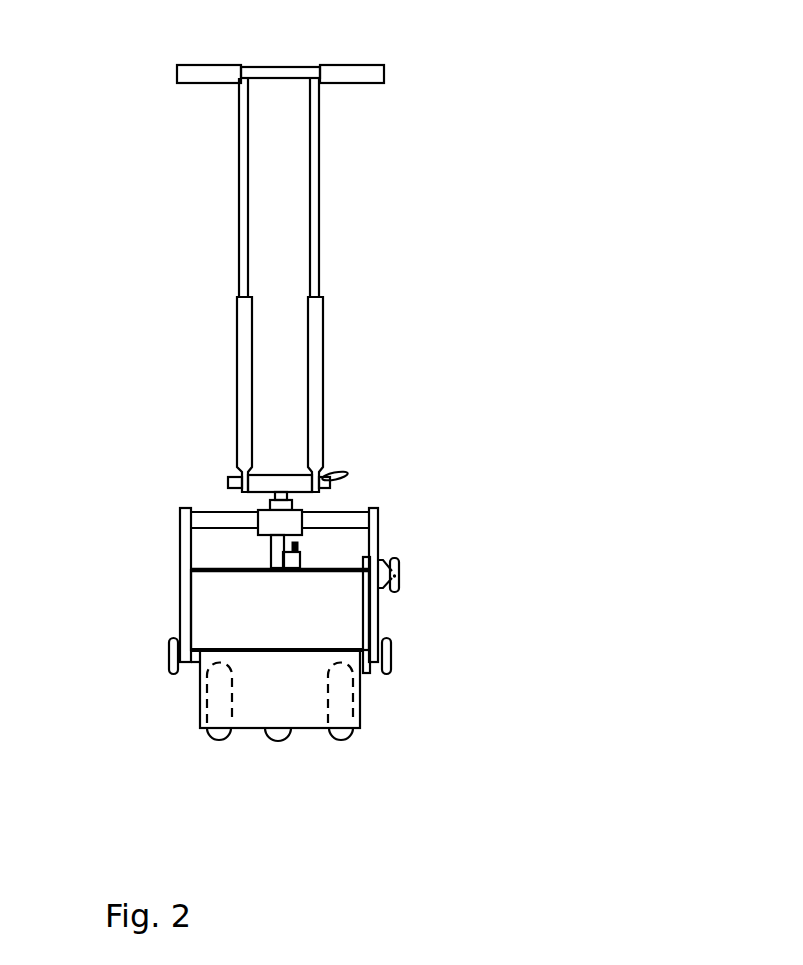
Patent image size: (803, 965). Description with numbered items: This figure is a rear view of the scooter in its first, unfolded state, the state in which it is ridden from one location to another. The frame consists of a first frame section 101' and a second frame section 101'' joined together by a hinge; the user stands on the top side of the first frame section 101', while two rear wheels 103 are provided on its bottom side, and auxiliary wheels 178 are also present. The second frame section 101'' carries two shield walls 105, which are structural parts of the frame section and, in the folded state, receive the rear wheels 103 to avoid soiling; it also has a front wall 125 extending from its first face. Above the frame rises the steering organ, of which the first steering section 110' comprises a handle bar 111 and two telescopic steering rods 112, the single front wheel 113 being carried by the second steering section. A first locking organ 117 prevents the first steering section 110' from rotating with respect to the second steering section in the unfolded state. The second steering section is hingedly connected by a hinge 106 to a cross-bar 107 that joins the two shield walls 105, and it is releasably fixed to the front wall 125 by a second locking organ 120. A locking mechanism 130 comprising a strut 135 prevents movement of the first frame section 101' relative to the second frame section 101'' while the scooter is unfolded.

The handle bar 111 is at (355, 73).
The first steering section 110' is at (321, 248).
The telescopic steering rods 112 is at (246, 368).
The first locking organ 117 is at (343, 474).
The second locking organ 120 is at (296, 553).
The hinge 106 is at (265, 520).
The cross-bar 107 is at (208, 520).
The shield walls 105 is at (185, 547).
The second frame section 101'' is at (280, 549).
The front wall 125 is at (215, 596).
The locking mechanism 130 is at (428, 573).
The strut 135 is at (363, 617).
The auxiliary wheels 178 is at (173, 673).
The first frame section 101' is at (275, 749).
The rear wheels 103 is at (215, 742).
The front wheel 113 is at (278, 742).